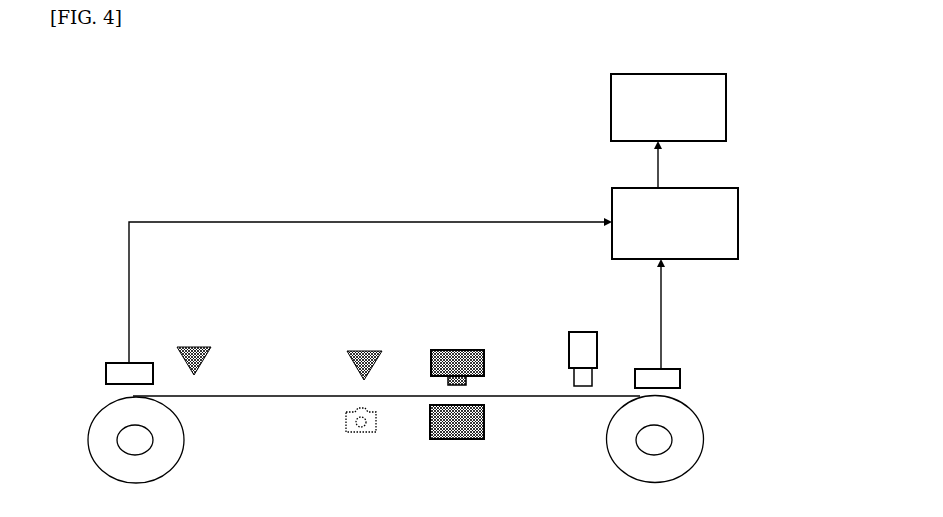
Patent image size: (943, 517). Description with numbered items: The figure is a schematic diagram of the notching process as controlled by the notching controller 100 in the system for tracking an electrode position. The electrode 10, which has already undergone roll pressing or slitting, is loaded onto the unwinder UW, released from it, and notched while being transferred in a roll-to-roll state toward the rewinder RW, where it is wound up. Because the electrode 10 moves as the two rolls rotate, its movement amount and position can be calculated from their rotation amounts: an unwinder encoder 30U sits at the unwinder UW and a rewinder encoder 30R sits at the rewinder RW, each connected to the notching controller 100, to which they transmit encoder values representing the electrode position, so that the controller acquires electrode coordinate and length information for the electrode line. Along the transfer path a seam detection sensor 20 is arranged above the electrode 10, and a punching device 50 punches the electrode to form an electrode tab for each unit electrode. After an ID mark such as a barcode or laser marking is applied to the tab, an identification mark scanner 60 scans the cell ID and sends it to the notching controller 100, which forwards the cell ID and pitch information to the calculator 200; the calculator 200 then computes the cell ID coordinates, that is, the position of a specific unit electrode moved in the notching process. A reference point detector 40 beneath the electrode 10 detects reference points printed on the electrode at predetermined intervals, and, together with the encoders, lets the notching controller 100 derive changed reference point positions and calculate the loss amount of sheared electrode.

The calculator 200 is at (726, 113).
The notching controller 100 is at (738, 229).
The unwinder encoder 30U is at (112, 372).
The rewinder encoder 30R is at (670, 380).
The seam detection sensor 20 is at (195, 347).
The electrode 10 is at (242, 395).
The punching device 50 is at (452, 349).
The reference point detector 40 is at (362, 428).
The identification (ID) mark scanner 60 is at (583, 343).
The unwinder UW is at (172, 434).
The rewinder RW is at (692, 440).